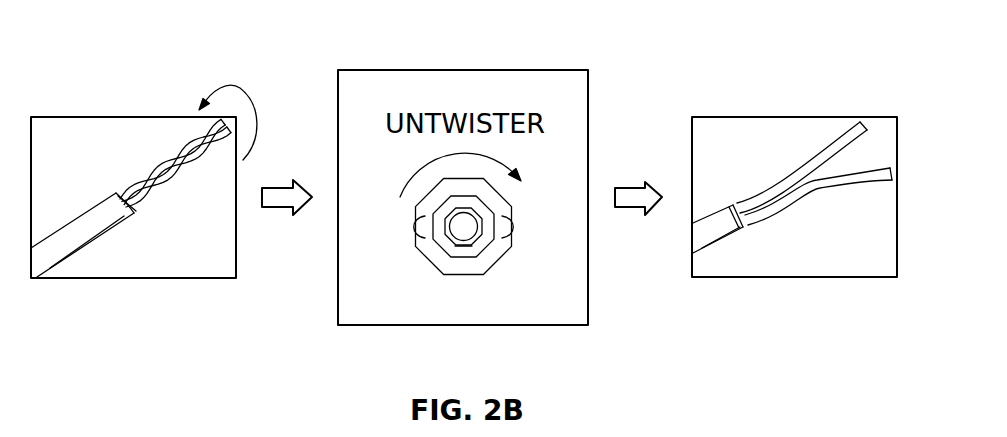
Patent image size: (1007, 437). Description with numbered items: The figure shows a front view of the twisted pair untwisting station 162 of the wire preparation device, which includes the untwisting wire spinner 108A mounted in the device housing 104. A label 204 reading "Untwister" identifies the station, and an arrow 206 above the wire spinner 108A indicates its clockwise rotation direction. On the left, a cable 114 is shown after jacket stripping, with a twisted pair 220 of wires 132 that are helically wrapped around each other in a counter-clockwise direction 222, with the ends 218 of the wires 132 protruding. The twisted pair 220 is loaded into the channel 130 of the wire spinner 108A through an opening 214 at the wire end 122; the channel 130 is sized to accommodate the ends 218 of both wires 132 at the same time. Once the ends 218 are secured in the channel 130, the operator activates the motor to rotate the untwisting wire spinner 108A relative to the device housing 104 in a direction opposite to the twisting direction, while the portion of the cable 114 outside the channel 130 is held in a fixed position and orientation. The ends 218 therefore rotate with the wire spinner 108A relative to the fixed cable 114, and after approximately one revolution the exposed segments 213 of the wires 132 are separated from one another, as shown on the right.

The device housing 104 is at (577, 103).
The untwisting wire spinner 108A is at (489, 241).
The cable 114 is at (72, 233).
The wire end 122 is at (485, 222).
The channel 130 is at (451, 237).
The wires 132 is at (178, 157).
The twisted pair untwisting station 162 is at (566, 42).
The labels 204 is at (355, 104).
The arrows 206 is at (405, 187).
The exposed segments 213 is at (143, 173).
The opening 214 is at (463, 250).
The ends 218 is at (222, 125).
The twisted pair 220 is at (479, 184).
The counter-clockwise direction 222 is at (228, 86).